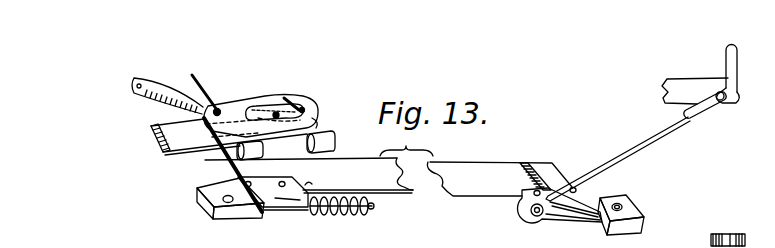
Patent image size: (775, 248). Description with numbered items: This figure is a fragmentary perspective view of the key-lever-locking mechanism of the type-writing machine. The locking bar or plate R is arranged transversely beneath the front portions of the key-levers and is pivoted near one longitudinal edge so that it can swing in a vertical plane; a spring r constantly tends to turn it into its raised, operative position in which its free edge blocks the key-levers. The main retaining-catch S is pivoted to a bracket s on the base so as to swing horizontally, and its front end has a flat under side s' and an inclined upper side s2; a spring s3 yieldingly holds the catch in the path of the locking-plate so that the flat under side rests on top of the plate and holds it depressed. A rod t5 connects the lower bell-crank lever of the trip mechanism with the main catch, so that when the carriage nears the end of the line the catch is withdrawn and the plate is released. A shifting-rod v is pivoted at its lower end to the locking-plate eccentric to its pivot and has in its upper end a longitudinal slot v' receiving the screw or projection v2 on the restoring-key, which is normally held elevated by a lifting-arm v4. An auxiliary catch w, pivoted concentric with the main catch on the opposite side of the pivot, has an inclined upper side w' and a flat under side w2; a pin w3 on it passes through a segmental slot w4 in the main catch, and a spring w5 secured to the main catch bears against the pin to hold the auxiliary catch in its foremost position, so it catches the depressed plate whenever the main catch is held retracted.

The locking bar or plate R is at (388, 181).
The spring r is at (333, 215).
The bracket s is at (221, 137).
The flat under side s' is at (224, 165).
The inclined upper side s2 is at (240, 167).
The spring s3 is at (170, 102).
The main retaining-catch S is at (231, 106).
The rod t5 is at (198, 80).
The shifting-rod v is at (618, 159).
The longitudinal slot v' is at (705, 123).
The screw or projection v2 is at (728, 103).
The lifting-arm v4 is at (695, 78).
The auxiliary catch w is at (326, 109).
The inclined upper side w' is at (333, 127).
The flat under side w2 is at (301, 118).
The pin w3 is at (316, 108).
The segmental slot w4 is at (294, 106).
The spring w5 is at (276, 112).